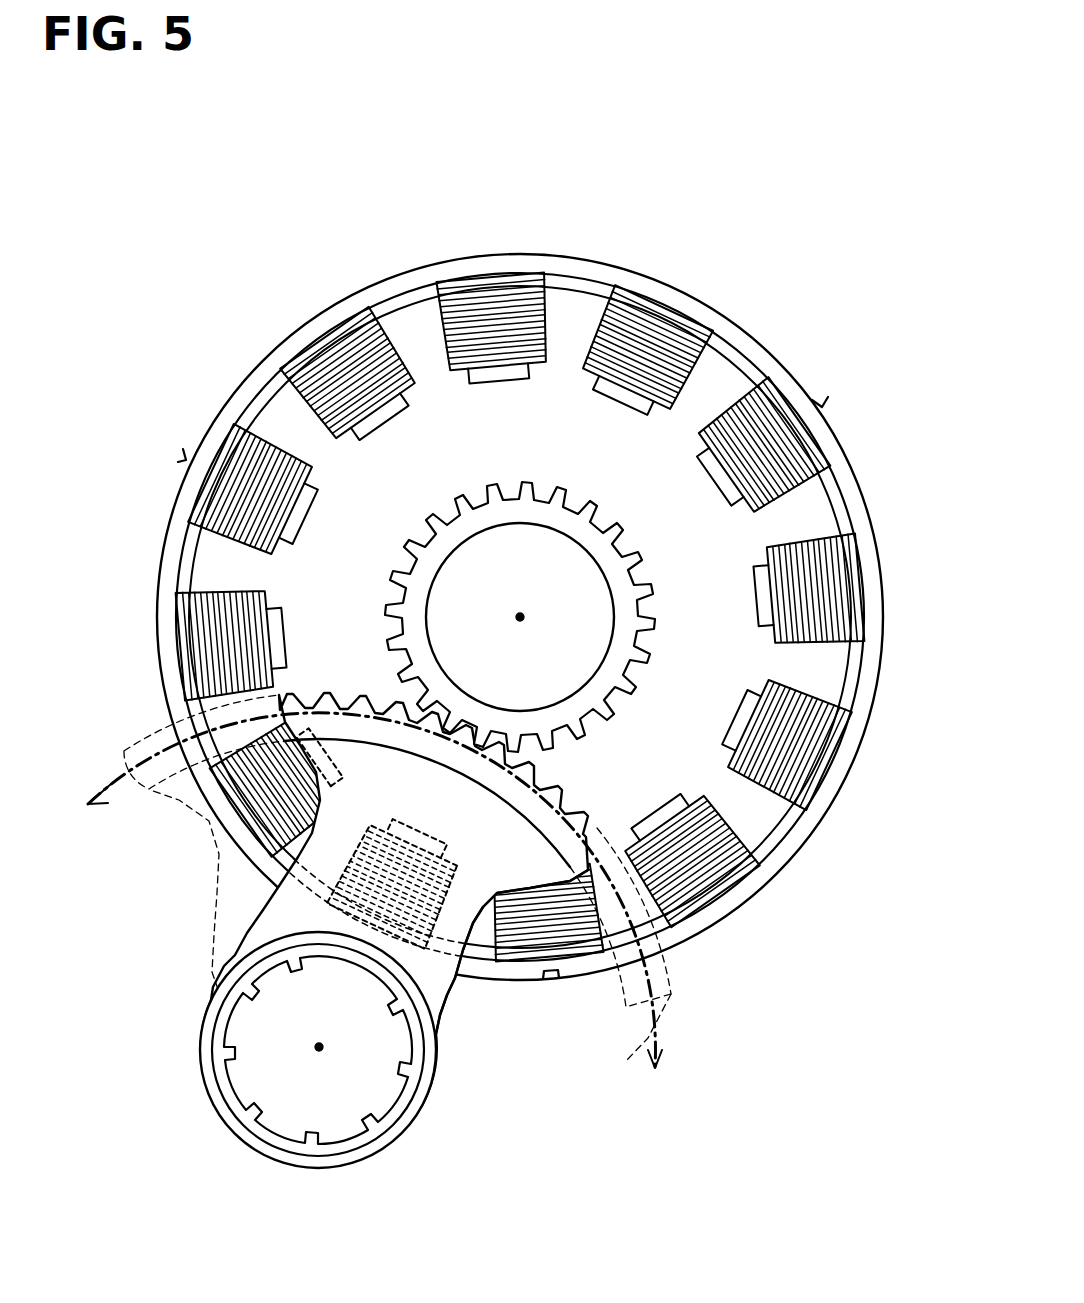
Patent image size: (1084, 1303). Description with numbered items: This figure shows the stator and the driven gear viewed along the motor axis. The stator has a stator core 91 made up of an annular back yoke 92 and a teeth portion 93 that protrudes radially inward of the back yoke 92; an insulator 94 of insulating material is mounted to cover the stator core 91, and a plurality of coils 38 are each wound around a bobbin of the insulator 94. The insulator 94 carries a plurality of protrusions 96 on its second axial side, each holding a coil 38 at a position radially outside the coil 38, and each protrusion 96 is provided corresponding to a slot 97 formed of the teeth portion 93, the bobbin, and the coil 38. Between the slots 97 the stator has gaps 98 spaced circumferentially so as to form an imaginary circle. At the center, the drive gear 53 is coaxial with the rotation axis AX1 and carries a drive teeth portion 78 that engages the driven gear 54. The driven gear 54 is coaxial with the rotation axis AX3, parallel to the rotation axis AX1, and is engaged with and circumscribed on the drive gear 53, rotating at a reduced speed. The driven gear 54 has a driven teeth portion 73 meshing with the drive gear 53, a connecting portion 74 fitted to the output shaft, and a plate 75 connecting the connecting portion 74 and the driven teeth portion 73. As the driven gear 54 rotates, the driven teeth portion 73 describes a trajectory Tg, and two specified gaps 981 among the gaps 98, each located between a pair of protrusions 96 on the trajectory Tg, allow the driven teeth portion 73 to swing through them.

The coil 38 is at (625, 345).
The drive gear 53 is at (653, 488).
The driven gear 54 is at (187, 1054).
The driven teeth portion 73 is at (488, 929).
The connecting portion 74 is at (216, 997).
The plate 75 is at (466, 925).
The drive teeth portion 78 is at (646, 650).
The stator core 91 is at (180, 467).
The back yoke 92 is at (523, 581).
The teeth portion 93 is at (220, 600).
The insulator 94 is at (186, 524).
The protrusion 96 is at (523, 622).
The slot 97 is at (300, 622).
The gap 98 is at (414, 298).
The specified gap 981 is at (282, 718).
The rotation axis AX1 is at (523, 616).
The rotation axis AX3 is at (321, 1050).
The trajectory Tg is at (656, 1038).